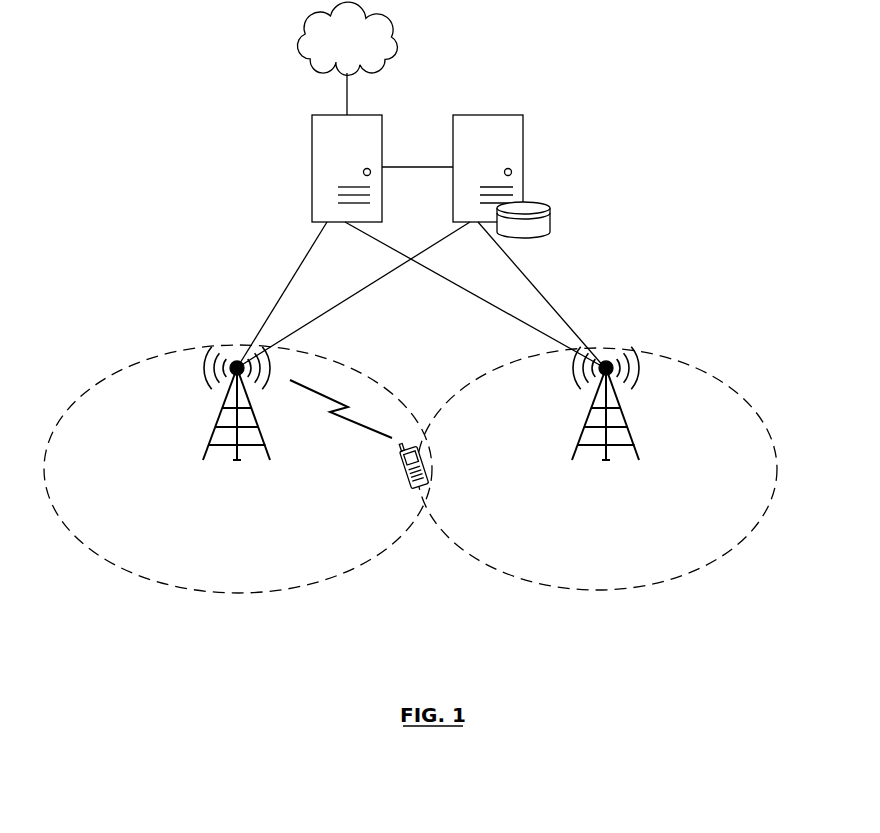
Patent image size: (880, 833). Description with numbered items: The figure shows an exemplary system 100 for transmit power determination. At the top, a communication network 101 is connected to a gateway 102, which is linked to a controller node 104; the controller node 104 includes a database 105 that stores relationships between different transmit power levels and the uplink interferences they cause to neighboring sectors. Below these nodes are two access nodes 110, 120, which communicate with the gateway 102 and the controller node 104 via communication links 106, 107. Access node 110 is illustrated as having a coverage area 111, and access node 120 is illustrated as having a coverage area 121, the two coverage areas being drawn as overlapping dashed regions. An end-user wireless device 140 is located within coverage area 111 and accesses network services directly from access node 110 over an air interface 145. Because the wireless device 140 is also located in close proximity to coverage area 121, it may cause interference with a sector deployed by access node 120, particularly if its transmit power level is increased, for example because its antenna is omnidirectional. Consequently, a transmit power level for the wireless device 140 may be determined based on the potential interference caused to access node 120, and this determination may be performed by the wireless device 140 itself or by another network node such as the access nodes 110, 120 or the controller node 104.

The system 100 is at (492, 60).
The communication network 101 is at (330, 50).
The gateway 102 is at (312, 142).
The controller node 104 is at (524, 152).
The database 105 is at (551, 222).
The communication links 106 is at (389, 249).
The communication links 107 is at (506, 254).
The access node 110 is at (233, 364).
The coverage area 111 is at (103, 558).
The access node 120 is at (611, 364).
The coverage area 121 is at (703, 562).
The end-user wireless device 140 is at (403, 482).
The air interface 145 is at (336, 419).